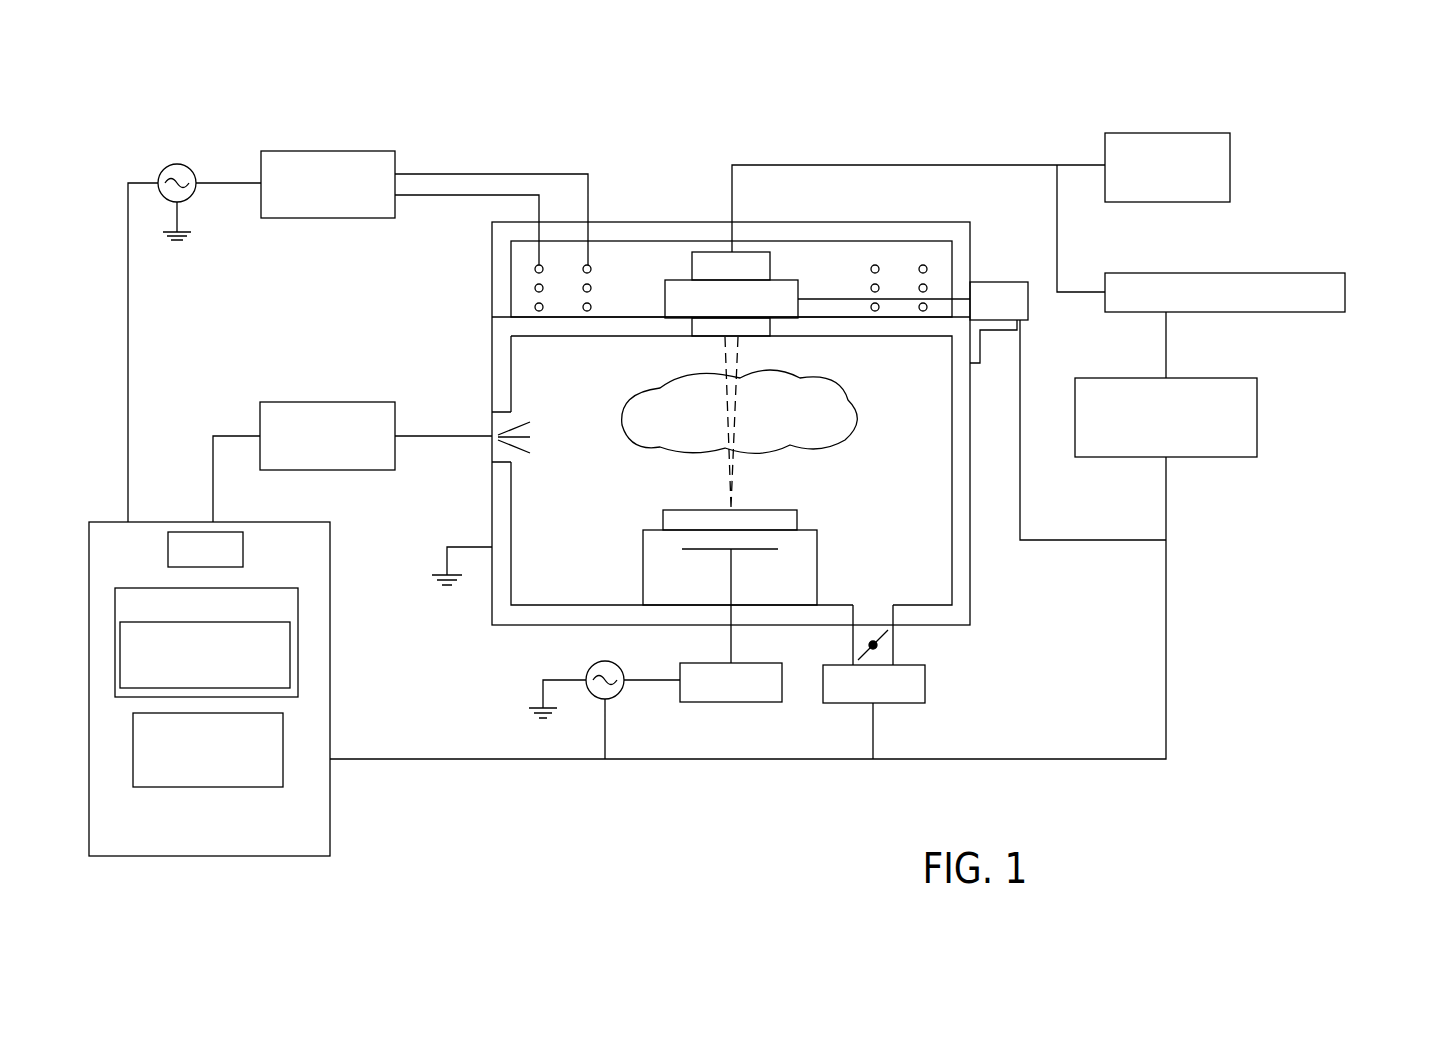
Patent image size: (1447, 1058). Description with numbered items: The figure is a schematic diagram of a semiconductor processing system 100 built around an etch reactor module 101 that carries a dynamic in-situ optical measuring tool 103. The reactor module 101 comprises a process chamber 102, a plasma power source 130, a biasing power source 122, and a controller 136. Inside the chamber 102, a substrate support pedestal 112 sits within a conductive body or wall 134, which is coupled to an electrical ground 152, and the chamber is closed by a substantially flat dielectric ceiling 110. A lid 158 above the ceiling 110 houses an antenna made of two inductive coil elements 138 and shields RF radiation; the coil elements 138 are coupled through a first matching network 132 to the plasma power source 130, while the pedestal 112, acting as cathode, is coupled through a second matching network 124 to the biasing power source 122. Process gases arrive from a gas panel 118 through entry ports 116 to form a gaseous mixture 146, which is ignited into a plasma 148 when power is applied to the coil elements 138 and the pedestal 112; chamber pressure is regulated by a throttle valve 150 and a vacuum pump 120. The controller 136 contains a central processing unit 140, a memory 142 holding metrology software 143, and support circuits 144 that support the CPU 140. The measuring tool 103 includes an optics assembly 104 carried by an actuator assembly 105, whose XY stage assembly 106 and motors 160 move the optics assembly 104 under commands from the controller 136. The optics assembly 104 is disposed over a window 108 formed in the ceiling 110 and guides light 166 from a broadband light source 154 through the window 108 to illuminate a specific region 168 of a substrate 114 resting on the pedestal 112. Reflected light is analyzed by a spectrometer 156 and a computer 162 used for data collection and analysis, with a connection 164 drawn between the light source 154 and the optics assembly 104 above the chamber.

The semiconductor processing system 100 is at (700, 89).
The etch reactor module 101 is at (233, 97).
The process chamber 102 is at (452, 327).
The dynamic in-situ optical measuring tool 103 is at (706, 178).
The optics assembly 104 is at (705, 250).
The actuator assembly 105 is at (675, 250).
The XY stage assembly 106 is at (665, 282).
The window 108 is at (762, 338).
The dielectric ceiling 110 is at (855, 338).
The substrate support pedestal 112 is at (643, 572).
The substrate 114 is at (663, 520).
The entry ports 116 is at (541, 428).
The gas panel 118 is at (308, 400).
The vacuum pump 120 is at (838, 665).
The biasing power source 122 is at (591, 665).
The second matching network 124 is at (738, 702).
The plasma power source 130 is at (172, 164).
The first matching network 132 is at (360, 150).
The body (wall) 134 is at (492, 488).
The controller 136 is at (210, 858).
The inductive coil element 138 is at (537, 265).
The central processing unit (CPU) 140 is at (243, 548).
The memory 142 is at (298, 608).
The metrology software 143 is at (290, 652).
The support circuits 144 is at (283, 733).
The gaseous mixture 146 is at (700, 424).
The plasma 148 is at (817, 419).
The throttle valve 150 is at (890, 640).
The electrical ground 152 is at (470, 546).
The broadband light source 154 is at (1230, 163).
The spectrometer 156 is at (1345, 292).
The lid 158 is at (840, 222).
The motors 160 is at (1028, 300).
The computer 162 is at (1257, 415).
The optical fiber / light path 164 is at (850, 165).
The light 166 is at (725, 462).
The illuminated region 168 is at (744, 505).